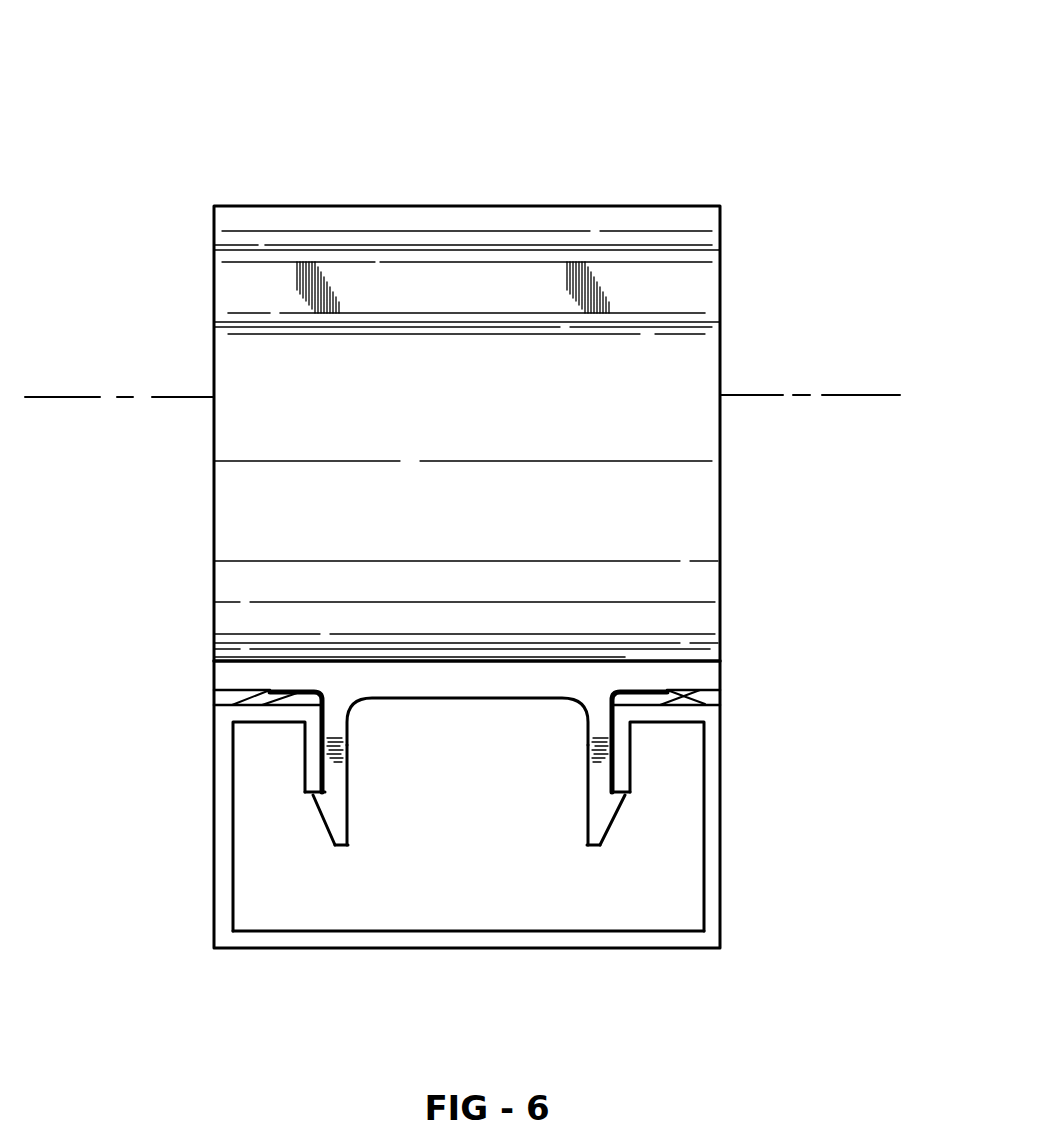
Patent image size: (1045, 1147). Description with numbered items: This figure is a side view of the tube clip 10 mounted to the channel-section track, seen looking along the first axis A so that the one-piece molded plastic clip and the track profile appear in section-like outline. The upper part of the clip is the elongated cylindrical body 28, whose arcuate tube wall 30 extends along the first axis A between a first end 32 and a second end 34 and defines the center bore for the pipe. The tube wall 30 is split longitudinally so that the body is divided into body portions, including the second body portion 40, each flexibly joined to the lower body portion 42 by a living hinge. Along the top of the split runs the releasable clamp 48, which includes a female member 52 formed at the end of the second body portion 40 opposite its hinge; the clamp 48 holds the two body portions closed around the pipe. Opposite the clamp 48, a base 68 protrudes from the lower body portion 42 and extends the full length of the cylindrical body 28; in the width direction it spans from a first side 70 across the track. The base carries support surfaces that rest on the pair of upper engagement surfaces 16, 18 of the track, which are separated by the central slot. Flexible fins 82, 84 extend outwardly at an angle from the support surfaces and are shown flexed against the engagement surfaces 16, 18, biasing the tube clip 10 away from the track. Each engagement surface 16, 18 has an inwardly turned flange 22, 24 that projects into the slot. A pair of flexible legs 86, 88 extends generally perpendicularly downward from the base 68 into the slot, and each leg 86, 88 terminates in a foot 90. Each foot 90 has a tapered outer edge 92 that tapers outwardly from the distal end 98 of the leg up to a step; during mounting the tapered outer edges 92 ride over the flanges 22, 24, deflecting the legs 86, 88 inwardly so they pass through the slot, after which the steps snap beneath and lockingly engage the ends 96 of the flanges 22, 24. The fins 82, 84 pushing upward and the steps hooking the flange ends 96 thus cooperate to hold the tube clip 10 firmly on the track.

The tube clip 10 is at (799, 95).
The clamp 48 is at (246, 176).
The female member 52 is at (643, 222).
The cylindrical body 28 is at (726, 275).
The second body portion 40 is at (226, 355).
The tube wall 30 is at (700, 349).
The first end 32 is at (720, 443).
The first axis A is at (876, 395).
The second end 34 is at (214, 443).
The lower body portion 42 is at (700, 569).
The upper engagement surface 16 is at (300, 705).
The upper engagement surface 18 is at (615, 705).
The base 68 is at (210, 675).
The flexible fin 84 is at (694, 690).
The flexible fin 82 is at (262, 707).
The flange 22 is at (310, 768).
The flange 24 is at (618, 770).
The end 96 is at (318, 796).
The first side 70 is at (475, 690).
The foot 90 is at (344, 810).
The flexible leg 86 is at (350, 745).
The flexible leg 88 is at (592, 766).
The tapered outer edge 92 is at (328, 822).
The distal end 98 is at (340, 850).